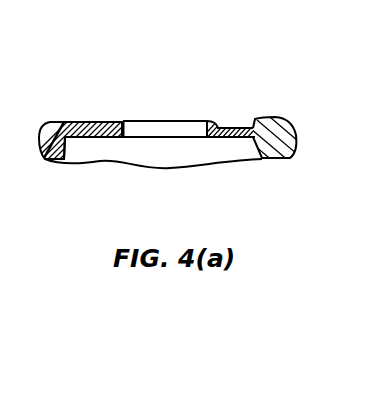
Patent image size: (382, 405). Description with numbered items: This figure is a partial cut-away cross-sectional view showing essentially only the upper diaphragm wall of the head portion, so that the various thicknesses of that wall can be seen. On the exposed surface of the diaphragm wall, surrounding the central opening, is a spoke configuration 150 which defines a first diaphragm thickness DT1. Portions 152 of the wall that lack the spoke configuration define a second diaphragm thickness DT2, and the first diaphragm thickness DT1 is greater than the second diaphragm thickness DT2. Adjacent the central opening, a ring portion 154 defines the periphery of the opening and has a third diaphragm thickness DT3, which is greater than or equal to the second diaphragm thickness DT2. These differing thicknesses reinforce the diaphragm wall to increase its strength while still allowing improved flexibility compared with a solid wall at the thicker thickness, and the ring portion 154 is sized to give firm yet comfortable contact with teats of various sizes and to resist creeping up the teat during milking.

The spoke configuration 150 is at (82, 122).
The portions 152 is at (259, 160).
The ring portion 154 is at (197, 120).
The first diaphragm thickness DT1 is at (90, 158).
The second diaphragm thickness DT2 is at (252, 157).
The third diaphragm thickness DT3 is at (212, 157).